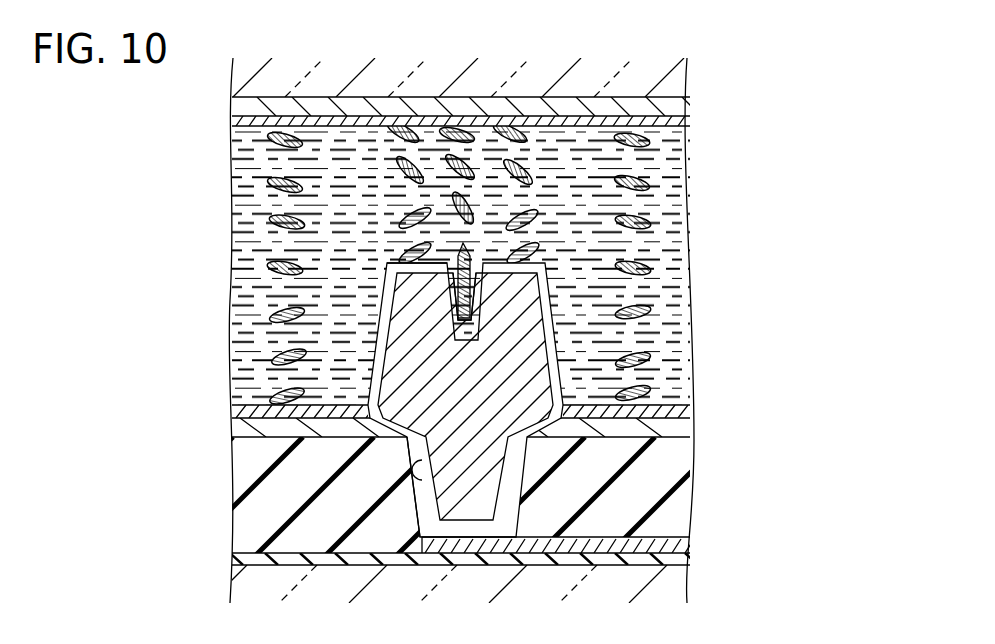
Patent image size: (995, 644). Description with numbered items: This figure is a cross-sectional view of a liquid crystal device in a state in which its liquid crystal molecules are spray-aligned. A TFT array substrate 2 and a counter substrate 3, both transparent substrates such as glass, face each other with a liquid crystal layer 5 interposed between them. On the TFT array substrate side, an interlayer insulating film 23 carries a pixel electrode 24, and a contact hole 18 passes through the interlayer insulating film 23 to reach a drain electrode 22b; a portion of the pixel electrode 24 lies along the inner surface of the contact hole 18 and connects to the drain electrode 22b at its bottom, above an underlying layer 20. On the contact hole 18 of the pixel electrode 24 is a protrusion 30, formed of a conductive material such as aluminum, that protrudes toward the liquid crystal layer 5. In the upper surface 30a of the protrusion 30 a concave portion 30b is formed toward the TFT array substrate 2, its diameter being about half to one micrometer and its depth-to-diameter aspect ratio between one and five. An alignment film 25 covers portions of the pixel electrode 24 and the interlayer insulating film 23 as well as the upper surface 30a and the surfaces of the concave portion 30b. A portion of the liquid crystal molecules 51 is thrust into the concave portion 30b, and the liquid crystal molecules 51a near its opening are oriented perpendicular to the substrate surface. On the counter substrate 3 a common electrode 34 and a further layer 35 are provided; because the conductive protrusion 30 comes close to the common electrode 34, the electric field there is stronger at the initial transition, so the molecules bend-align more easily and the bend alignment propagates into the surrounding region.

The TFT array substrate 2 is at (677, 582).
The counter substrate 3 is at (672, 82).
The liquid crystal layer 5 is at (670, 178).
The contact hole 18 is at (407, 480).
The insulating film 20 is at (677, 557).
The drain electrode 22b is at (687, 543).
The interlayer insulating film 23 is at (667, 470).
The pixel electrode 24 is at (690, 428).
The alignment film 25 is at (693, 410).
The protrusion 30 is at (523, 305).
The upper surface of the protrusion 30a is at (400, 262).
The concave portion 30b is at (463, 245).
The common electrode 34 is at (670, 103).
The thin film layer 35 is at (680, 118).
The liquid crystal molecules 51 is at (650, 258).
The liquid crystal molecules near the opening of the concave portion 51a is at (473, 258).